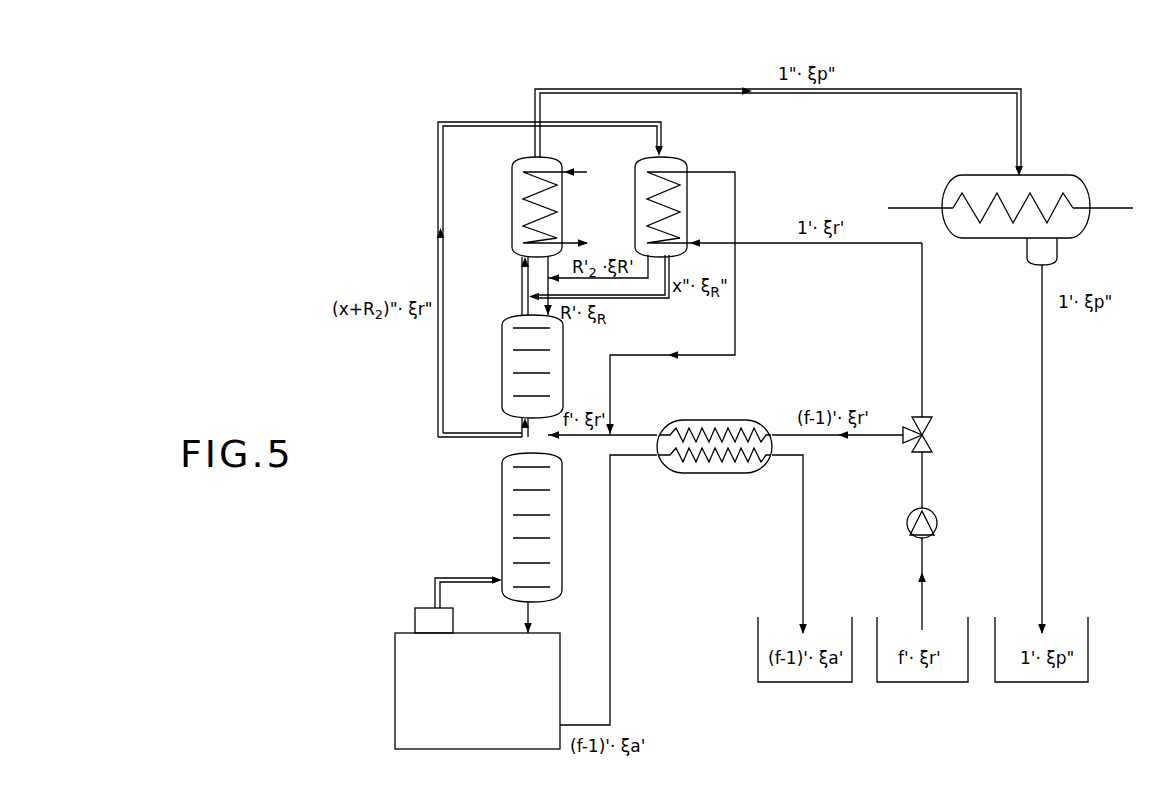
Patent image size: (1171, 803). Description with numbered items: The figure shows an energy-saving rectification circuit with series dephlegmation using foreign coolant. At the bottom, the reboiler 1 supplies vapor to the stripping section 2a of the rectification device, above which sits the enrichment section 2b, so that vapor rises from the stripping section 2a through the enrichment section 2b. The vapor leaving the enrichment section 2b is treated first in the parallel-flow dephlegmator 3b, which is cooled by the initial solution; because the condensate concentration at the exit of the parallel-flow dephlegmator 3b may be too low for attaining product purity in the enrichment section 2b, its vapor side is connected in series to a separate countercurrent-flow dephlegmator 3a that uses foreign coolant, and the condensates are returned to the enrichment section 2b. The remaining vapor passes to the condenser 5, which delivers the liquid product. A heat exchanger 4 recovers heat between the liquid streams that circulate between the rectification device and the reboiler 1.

The reboiler 1 is at (410, 684).
The stripping section of rectification device 2a is at (512, 530).
The enrichment section of rectification device 2b is at (510, 368).
The countercurrent-flow dephlegmator 3a is at (512, 210).
The parallel-flow dephlegmator 3b is at (664, 166).
The heat exchanger 4 is at (722, 464).
The condenser 5 is at (1042, 188).